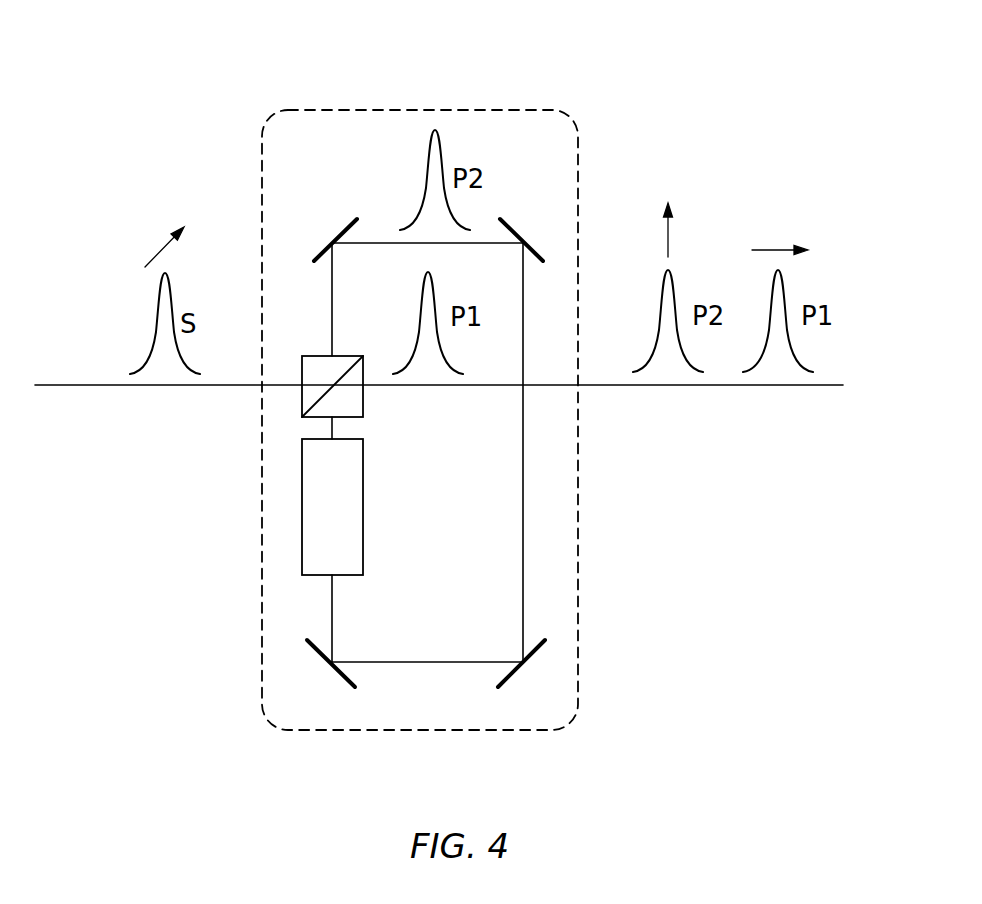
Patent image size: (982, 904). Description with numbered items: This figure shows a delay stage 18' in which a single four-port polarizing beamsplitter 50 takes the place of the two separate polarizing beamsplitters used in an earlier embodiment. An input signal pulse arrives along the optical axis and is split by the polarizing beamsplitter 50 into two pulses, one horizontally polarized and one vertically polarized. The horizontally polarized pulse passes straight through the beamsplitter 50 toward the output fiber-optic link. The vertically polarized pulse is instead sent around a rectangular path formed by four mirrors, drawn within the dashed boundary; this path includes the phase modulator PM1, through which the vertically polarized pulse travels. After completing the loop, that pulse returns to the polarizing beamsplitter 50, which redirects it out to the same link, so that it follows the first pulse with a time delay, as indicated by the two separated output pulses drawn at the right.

The delay stage 18' is at (399, 369).
The 4-port polarizing beamsplitter 50 is at (310, 354).
The phase modulator PM1 is at (363, 513).